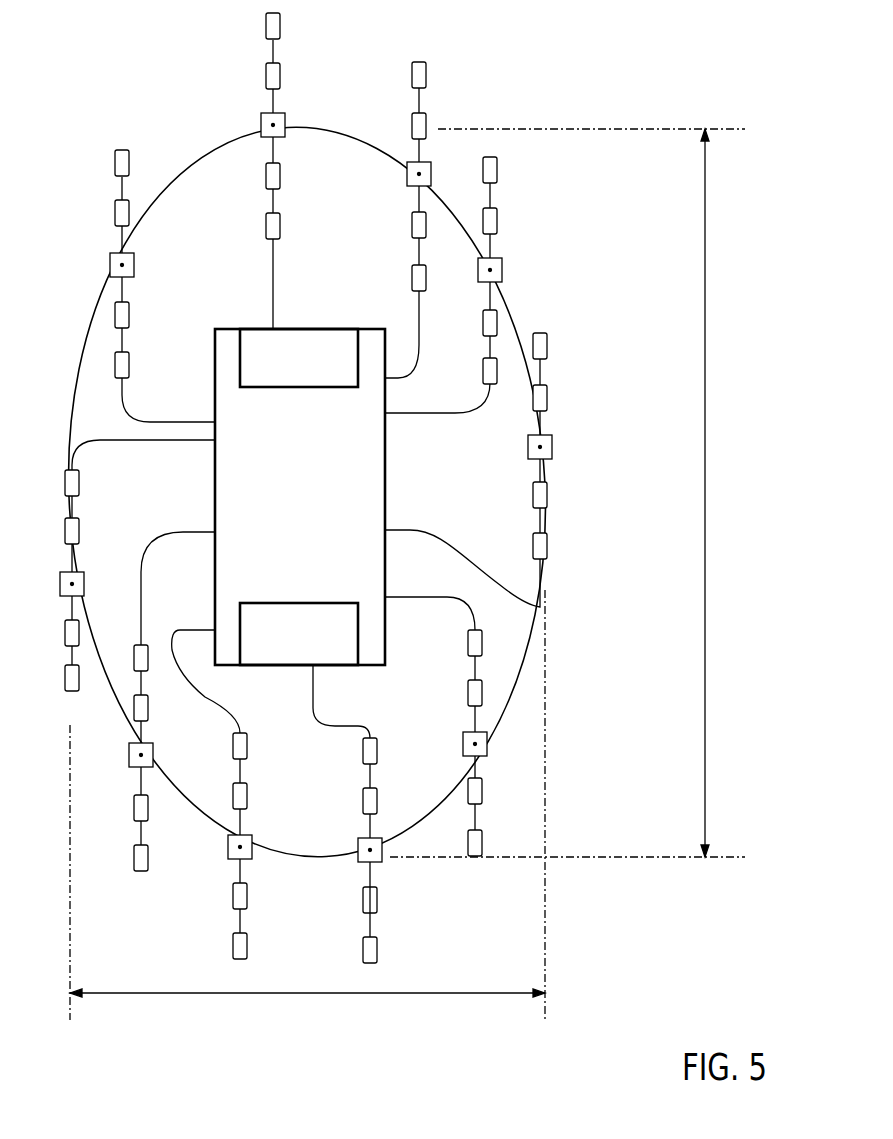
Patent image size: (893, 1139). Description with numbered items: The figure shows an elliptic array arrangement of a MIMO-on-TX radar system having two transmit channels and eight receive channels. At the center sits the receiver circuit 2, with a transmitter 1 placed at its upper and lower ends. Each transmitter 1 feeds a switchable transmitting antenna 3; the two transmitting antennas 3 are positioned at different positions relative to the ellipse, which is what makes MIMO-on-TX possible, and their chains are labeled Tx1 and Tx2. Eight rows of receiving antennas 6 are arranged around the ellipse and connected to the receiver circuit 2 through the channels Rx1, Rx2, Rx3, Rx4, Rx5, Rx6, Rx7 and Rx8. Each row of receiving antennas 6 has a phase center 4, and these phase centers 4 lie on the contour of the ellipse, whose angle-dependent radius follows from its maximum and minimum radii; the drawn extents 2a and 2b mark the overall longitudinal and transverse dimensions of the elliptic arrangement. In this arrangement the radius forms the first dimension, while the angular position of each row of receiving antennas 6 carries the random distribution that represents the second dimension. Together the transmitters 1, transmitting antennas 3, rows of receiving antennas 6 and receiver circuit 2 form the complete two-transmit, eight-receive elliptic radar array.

The transmitter 1 is at (247, 347).
The receiver circuit 2 is at (322, 467).
The transmitting antenna 3 is at (272, 79).
The phase center 4 is at (545, 455).
The row of receiving antennas 6 is at (545, 397).
The longitudinal dimension of sensor arrangement 2a is at (567, 493).
The transverse dimension of sensor arrangement 2b is at (307, 810).
The first transmit electrode chain Tx1 is at (320, 726).
The second transmit electrode chain Tx2 is at (272, 314).
The first receive electrode chain Rx1 is at (172, 422).
The second receive electrode chain Rx2 is at (205, 442).
The third receive electrode chain Rx3 is at (168, 532).
The fourth receive electrode chain Rx4 is at (195, 630).
The fifth receive electrode chain Rx5 is at (400, 597).
The sixth receive electrode chain Rx6 is at (460, 548).
The seventh receive electrode chain Rx7 is at (440, 420).
The eighth receive electrode chain Rx8 is at (415, 378).